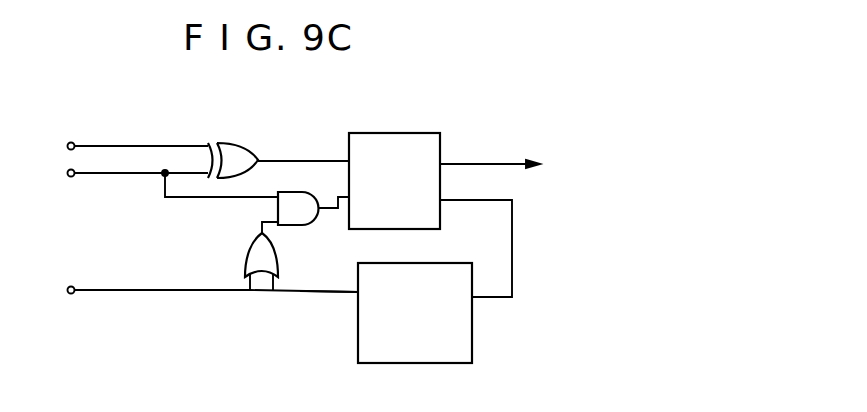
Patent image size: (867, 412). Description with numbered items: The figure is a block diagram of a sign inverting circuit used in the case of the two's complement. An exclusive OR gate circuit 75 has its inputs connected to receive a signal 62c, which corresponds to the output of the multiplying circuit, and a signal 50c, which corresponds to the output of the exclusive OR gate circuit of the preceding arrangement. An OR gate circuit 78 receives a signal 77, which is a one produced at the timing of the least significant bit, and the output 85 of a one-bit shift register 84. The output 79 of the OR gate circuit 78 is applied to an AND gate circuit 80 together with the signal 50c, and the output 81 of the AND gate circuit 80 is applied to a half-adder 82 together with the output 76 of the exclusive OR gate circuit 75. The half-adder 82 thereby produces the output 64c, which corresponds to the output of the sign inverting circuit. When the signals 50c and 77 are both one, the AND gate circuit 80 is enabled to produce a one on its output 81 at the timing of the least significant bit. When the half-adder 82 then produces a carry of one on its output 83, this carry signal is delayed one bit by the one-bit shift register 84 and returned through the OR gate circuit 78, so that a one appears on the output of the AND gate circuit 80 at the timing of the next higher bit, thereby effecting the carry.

The signal 62c is at (143, 146).
The signal 50c is at (121, 174).
The exclusive OR gate circuit 75 is at (245, 150).
The output of the exclusive OR gate circuit 76 is at (313, 160).
The half-adder 82 is at (419, 133).
The output 64c is at (489, 164).
The carry output 83 is at (512, 272).
The AND gate circuit 80 is at (315, 206).
The output of the AND gate circuit 81 is at (332, 210).
The output of the OR gate circuit 79 is at (262, 224).
The OR gate circuit 78 is at (247, 256).
The signal 77 is at (203, 292).
The output of the one-bit shift register 85 is at (323, 293).
The one-bit shift register 84 is at (360, 341).